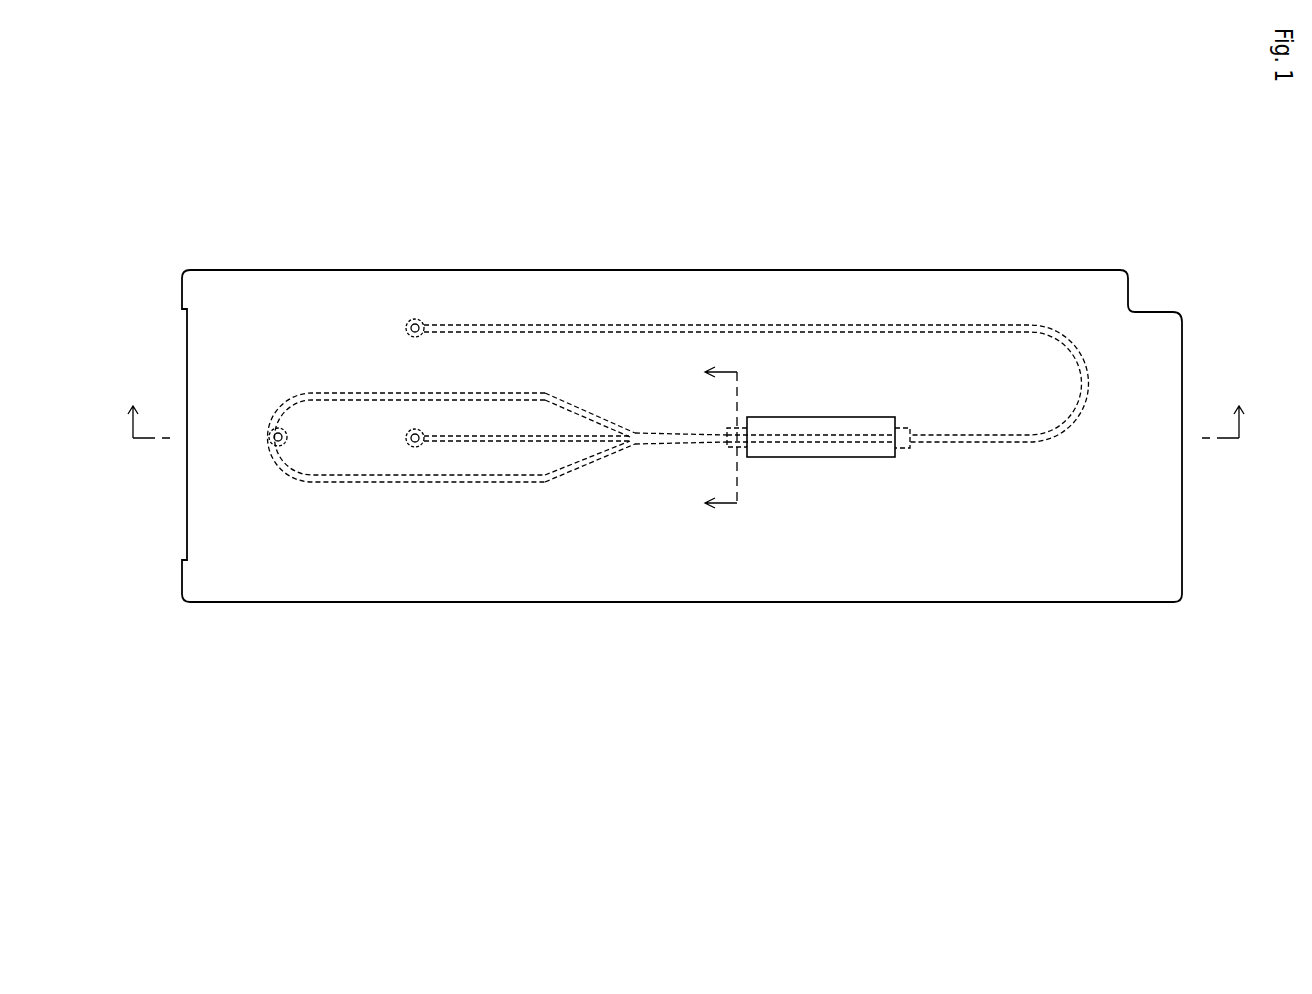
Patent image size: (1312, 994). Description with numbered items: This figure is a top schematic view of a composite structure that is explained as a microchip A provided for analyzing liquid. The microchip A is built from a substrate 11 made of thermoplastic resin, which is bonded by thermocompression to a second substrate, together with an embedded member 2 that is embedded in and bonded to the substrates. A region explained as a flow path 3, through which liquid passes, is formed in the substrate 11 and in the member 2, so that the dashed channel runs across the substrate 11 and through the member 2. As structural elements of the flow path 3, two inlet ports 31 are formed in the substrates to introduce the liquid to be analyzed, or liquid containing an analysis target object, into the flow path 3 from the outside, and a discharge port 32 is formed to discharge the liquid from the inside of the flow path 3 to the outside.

The microchip A is at (971, 252).
The substrate 11 is at (918, 587).
The member 2 is at (815, 460).
The flow path 3 is at (970, 446).
The inlet port 31 is at (277, 428).
The discharge port 32 is at (413, 320).